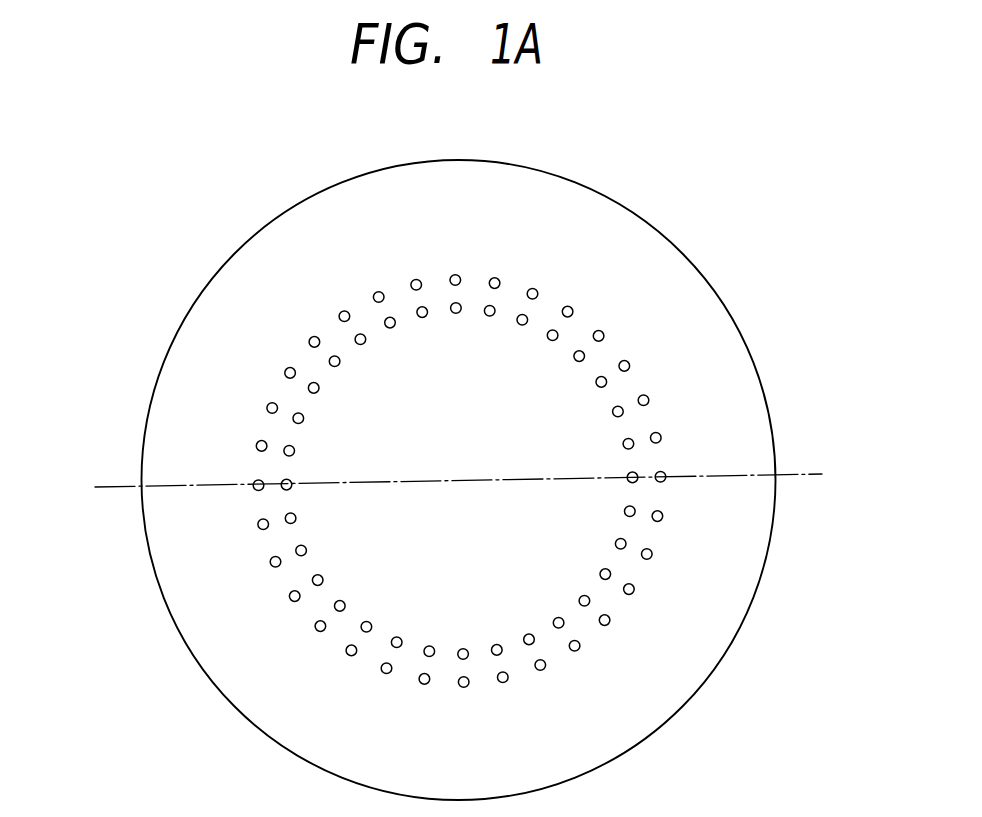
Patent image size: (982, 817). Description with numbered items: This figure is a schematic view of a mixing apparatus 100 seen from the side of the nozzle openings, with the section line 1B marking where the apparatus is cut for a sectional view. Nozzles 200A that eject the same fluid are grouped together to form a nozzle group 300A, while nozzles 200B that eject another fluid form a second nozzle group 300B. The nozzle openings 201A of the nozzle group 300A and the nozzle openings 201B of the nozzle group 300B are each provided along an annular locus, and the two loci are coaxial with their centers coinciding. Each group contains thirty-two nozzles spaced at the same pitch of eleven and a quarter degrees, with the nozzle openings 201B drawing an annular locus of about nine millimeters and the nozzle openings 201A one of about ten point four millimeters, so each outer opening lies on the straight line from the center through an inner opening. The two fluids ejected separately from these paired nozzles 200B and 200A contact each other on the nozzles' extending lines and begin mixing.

The mixing apparatus 100 is at (695, 263).
The nozzle 200A is at (533, 288).
The nozzle 200B is at (521, 325).
The nozzle group 300A is at (309, 341).
The nozzle group 300B is at (340, 364).
The nozzle opening 201A is at (291, 600).
The nozzle opening 201B is at (319, 575).
The section line 1B- 1B is at (455, 482).